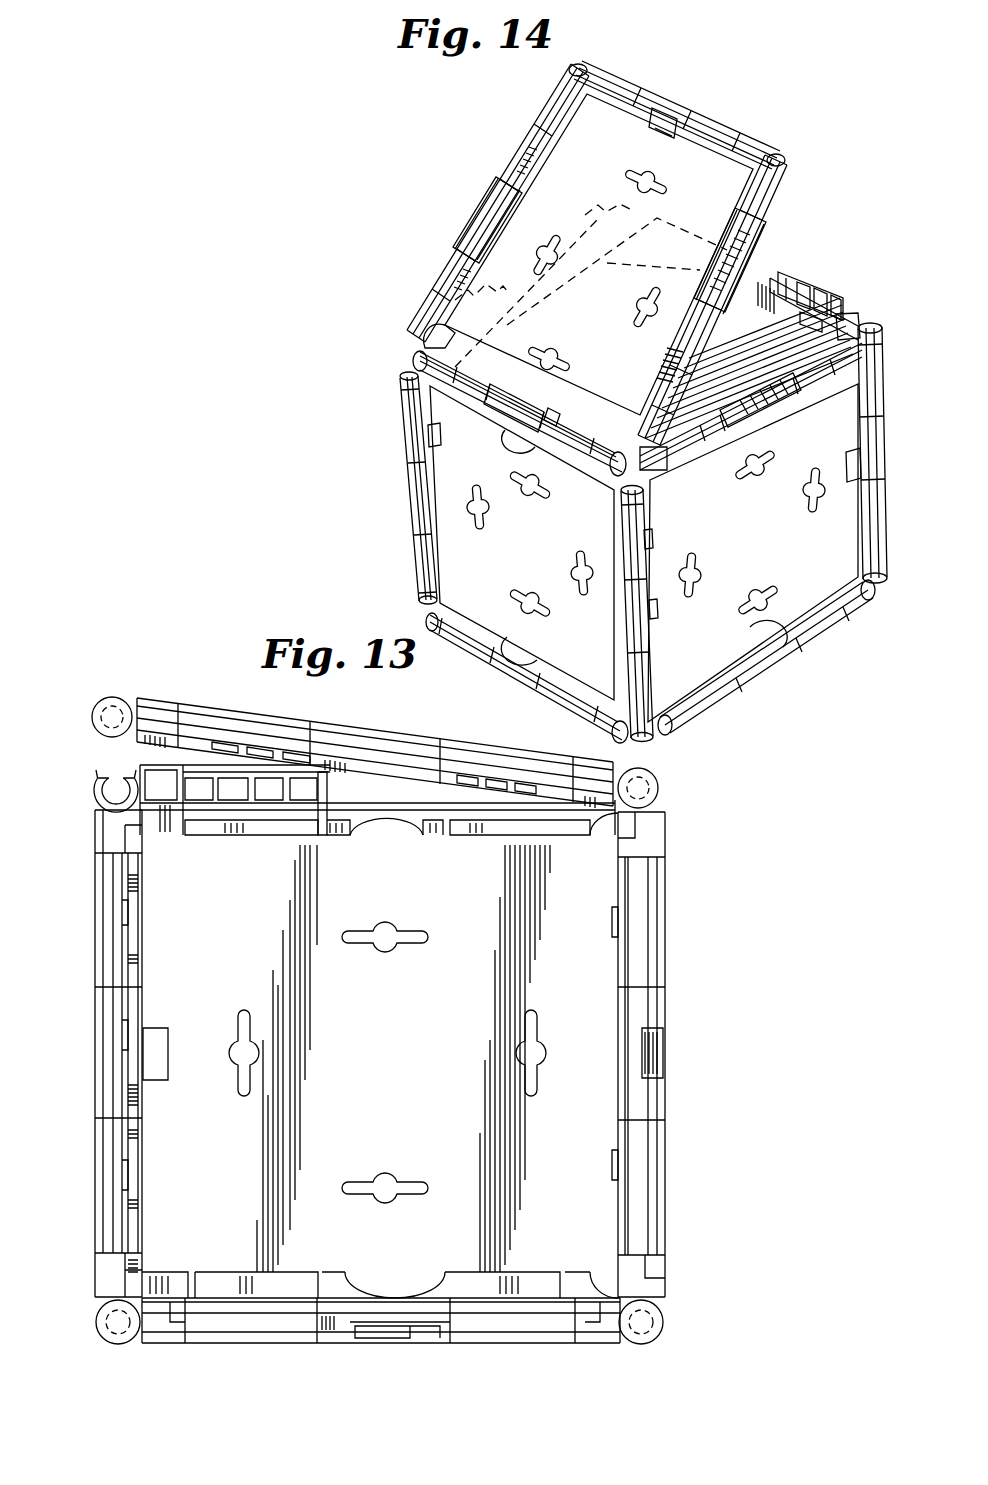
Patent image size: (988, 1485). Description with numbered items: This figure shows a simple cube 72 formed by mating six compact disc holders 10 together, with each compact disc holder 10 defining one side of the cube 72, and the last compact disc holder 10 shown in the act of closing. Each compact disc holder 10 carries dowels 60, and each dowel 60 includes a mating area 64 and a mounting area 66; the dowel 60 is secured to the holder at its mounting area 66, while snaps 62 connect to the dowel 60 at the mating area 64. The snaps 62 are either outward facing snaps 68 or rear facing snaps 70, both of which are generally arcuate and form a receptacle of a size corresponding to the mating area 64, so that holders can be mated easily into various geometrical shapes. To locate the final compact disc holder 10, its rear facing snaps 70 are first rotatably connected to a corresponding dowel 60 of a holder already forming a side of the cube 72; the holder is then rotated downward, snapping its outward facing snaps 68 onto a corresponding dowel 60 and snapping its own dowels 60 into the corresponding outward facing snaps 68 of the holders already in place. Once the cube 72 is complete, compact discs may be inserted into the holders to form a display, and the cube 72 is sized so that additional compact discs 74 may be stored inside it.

In FIG. 14, the compact disc holder 10 is at (718, 176).
In FIG. 13, the compact disc holder 10 is at (240, 700).
In FIG. 14, the dowel 60 is at (652, 80).
In FIG. 13, the dowel 60 is at (116, 697).
In FIG. 14, the snap 62 is at (798, 243).
In FIG. 14, the mating area 64 is at (522, 140).
In FIG. 14, the mounting area 66 is at (480, 183).
In FIG. 14, the outward facing snap 68 is at (558, 422).
In FIG. 13, the outward facing snap 68 is at (88, 776).
In FIG. 14, the rear facing snap 70 is at (790, 226).
In FIG. 14, the cube 72 is at (392, 408).
In FIG. 13, the cube 72 is at (690, 886).
In FIG. 14, the additional compact discs 74 is at (838, 306).